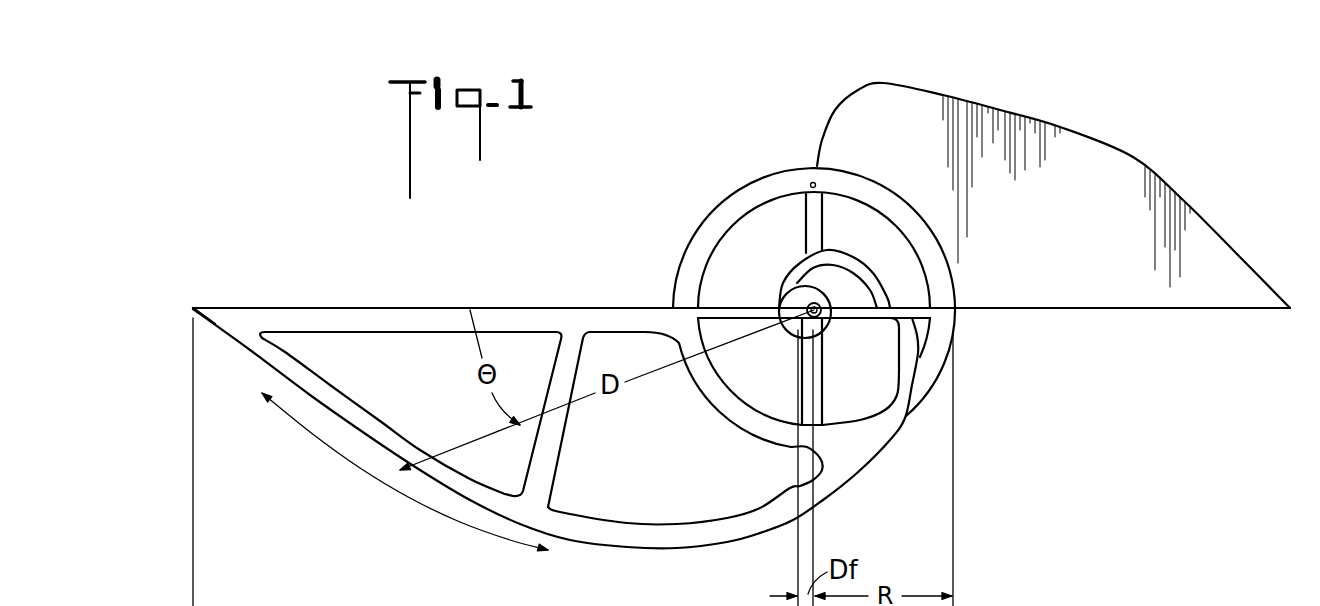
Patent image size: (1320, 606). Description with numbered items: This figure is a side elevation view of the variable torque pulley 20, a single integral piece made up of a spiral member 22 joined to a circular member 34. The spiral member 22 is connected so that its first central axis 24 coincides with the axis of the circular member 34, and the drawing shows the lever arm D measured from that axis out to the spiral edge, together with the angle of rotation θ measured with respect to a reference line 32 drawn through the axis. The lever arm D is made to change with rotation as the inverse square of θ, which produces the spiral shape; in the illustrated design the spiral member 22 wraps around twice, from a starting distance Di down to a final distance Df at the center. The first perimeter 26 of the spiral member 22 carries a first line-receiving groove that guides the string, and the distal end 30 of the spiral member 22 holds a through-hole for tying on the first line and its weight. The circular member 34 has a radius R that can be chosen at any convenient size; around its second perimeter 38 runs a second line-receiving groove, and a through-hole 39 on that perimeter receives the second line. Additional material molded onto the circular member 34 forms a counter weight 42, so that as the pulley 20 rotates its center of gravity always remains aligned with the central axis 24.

The variable torque pulley 20 is at (657, 208).
The spiral member 22 is at (580, 530).
The first central axis 24 is at (800, 302).
The first perimeter 26 is at (405, 472).
The distal end 30 is at (196, 307).
The reference line 32 is at (352, 308).
The circular member 34 is at (940, 316).
The second perimeter 38 is at (785, 152).
The through-hole 39 is at (812, 182).
The counter weight 42 is at (1215, 250).